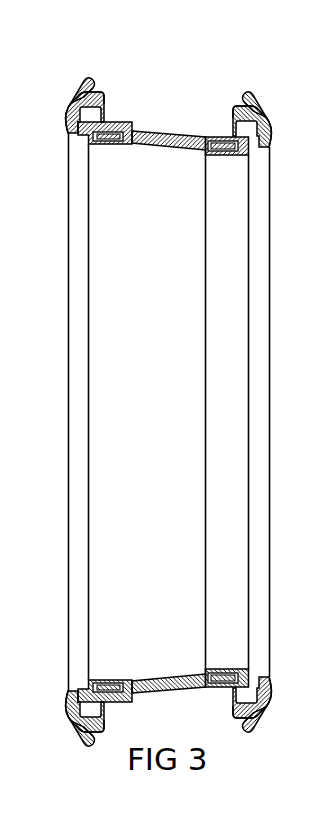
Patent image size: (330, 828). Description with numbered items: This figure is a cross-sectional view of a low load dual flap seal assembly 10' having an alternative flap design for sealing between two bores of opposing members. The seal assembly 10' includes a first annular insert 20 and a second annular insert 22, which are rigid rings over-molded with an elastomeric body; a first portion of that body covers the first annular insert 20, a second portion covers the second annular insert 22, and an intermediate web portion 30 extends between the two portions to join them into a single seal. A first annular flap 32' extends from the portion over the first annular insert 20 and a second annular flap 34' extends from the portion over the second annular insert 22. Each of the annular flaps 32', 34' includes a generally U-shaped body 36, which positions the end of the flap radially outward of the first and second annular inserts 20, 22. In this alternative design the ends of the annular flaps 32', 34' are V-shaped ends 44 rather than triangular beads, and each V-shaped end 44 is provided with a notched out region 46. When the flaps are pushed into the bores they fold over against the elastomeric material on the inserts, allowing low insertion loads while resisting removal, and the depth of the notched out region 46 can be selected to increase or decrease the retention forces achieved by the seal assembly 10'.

The seal assembly 10' is at (169, 357).
The first annular insert 20 is at (110, 140).
The second annular insert 22 is at (225, 156).
The intermediate web portion 30 is at (170, 131).
The first annular flap 32' is at (73, 379).
The second annular flap 34' is at (270, 384).
The U-shaped body 36 is at (68, 118).
The V-shaped end 44 is at (78, 91).
The notched out region 46 is at (96, 99).